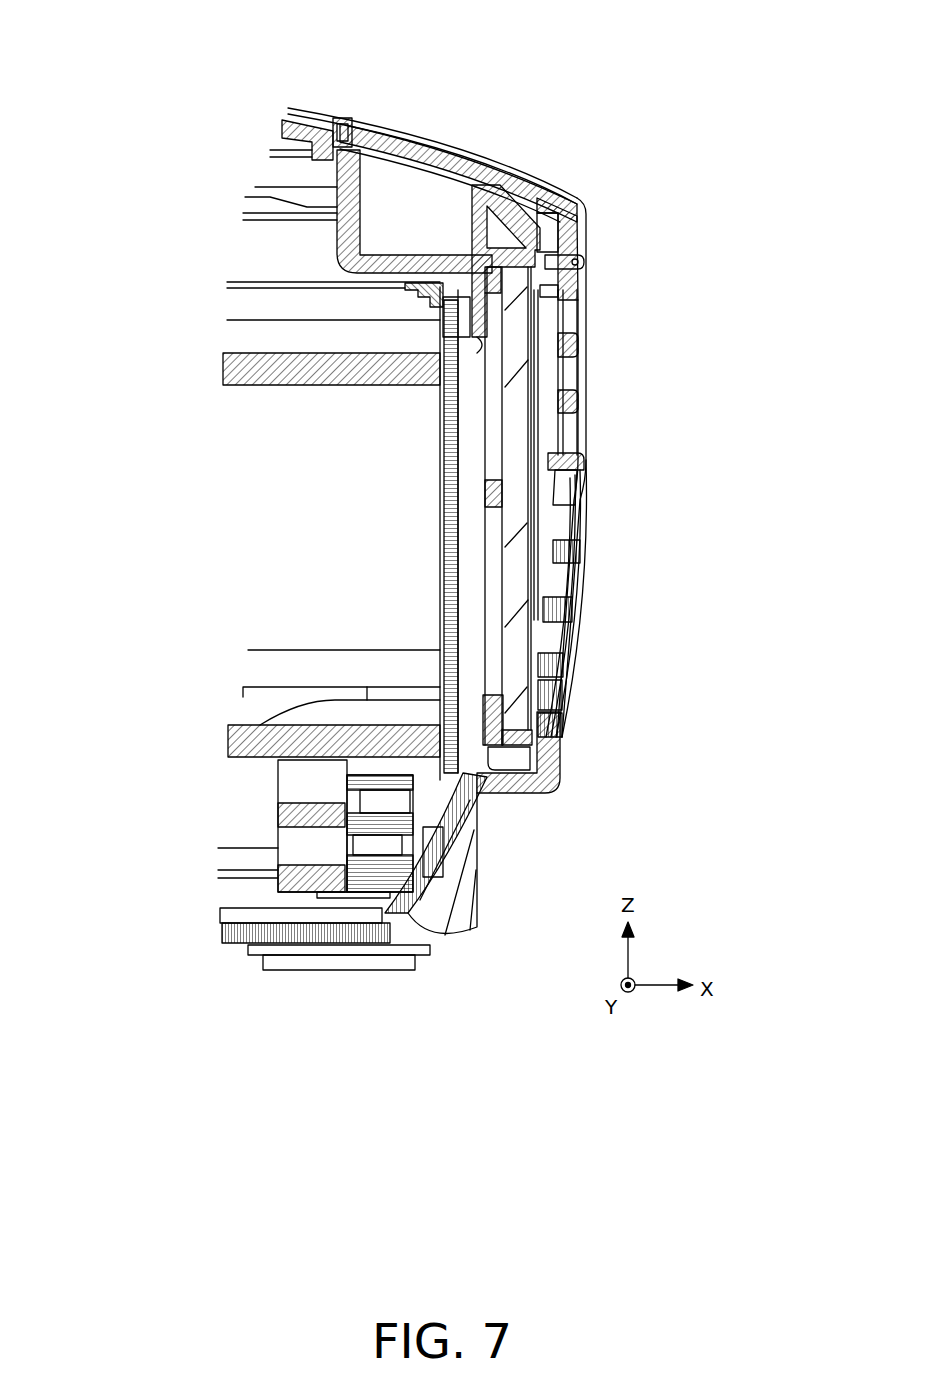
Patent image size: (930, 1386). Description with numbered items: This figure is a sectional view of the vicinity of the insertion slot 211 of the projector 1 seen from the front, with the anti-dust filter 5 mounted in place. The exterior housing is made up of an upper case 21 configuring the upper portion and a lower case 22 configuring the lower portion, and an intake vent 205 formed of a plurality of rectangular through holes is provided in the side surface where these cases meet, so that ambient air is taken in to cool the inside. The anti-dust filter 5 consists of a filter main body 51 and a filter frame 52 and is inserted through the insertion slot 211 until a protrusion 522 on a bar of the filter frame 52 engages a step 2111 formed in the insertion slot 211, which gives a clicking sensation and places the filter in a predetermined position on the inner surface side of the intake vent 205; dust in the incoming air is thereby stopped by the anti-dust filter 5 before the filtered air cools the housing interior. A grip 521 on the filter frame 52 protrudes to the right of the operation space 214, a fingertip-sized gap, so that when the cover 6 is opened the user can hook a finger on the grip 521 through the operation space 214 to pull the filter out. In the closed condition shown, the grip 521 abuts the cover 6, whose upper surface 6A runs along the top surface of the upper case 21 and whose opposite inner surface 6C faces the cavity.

The projector 1 is at (565, 77).
The upper case 21 is at (308, 108).
The upper surface 6A is at (384, 127).
The operation space 214 is at (420, 181).
The grip 521 is at (505, 198).
The cover 6 is at (551, 198).
The inner surface 6C is at (540, 213).
The insertion slot 211 is at (537, 265).
The step 2111 is at (480, 325).
The protrusion 522 is at (455, 395).
The intake vent 205 is at (572, 365).
The filter frame 52 is at (493, 508).
The filter main body 51 is at (517, 578).
The anti-dust filter 5 is at (573, 520).
The lower case 22 is at (517, 793).